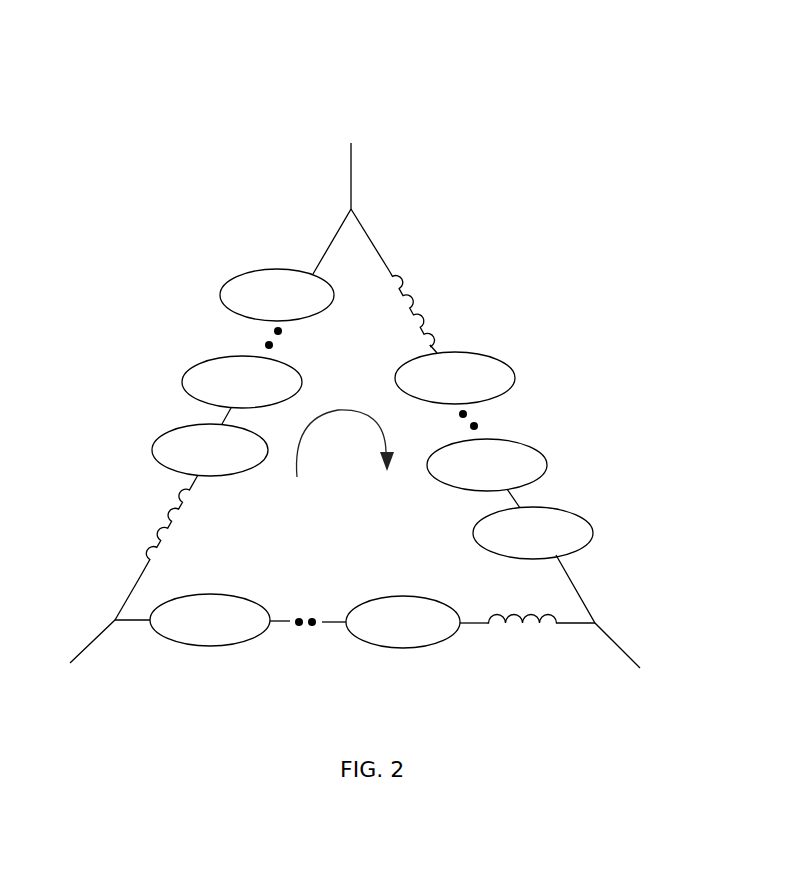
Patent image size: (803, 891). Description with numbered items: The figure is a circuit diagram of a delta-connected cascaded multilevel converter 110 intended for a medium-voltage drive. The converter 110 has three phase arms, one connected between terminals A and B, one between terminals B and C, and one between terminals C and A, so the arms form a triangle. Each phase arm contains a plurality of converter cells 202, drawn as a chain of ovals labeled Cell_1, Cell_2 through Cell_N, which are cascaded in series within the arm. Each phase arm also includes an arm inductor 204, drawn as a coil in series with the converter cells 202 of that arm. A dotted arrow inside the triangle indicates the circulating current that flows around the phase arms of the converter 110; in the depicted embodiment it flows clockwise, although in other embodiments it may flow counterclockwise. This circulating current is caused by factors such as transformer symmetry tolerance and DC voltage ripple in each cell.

The delta-connected cascaded multilevel converter 110 is at (197, 88).
The converter cell 202 is at (177, 425).
The arm inductor 204 is at (160, 517).